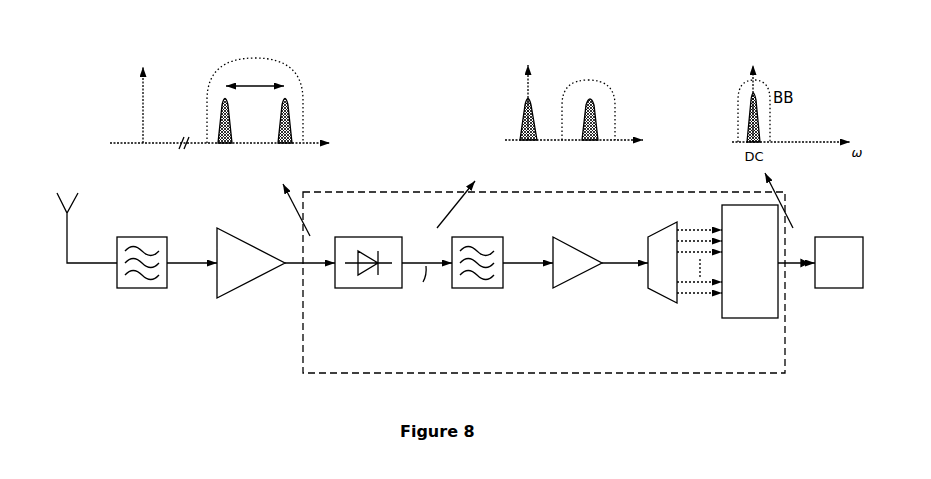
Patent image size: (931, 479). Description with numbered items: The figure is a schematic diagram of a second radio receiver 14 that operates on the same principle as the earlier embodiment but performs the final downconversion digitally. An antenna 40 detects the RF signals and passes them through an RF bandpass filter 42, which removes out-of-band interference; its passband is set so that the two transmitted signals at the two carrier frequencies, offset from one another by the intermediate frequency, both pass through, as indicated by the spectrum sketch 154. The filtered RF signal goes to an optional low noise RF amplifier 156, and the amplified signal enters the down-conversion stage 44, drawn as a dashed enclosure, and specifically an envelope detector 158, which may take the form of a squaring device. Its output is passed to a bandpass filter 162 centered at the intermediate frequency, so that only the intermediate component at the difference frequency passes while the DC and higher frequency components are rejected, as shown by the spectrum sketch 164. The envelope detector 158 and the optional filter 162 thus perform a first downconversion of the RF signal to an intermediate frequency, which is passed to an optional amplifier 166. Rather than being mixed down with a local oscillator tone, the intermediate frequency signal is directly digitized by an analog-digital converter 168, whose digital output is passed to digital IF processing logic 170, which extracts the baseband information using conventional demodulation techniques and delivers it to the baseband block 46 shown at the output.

The receiver 14 is at (78, 122).
The antenna 40 is at (76, 199).
The RF bandpass filter 42 is at (117, 273).
The down-conversion stage 44 is at (785, 329).
The baseband block 46 is at (840, 237).
The RF passband spectrum 154 is at (188, 62).
The low noise RF amplifier 156 is at (252, 243).
The envelope detector 158 is at (360, 237).
The bandpass filter 162 is at (490, 237).
The IF passband spectrum 164 is at (581, 62).
The amplifier 166 is at (582, 252).
The analog-digital converter 168 is at (661, 298).
The digital IF processing logic 170 is at (745, 319).